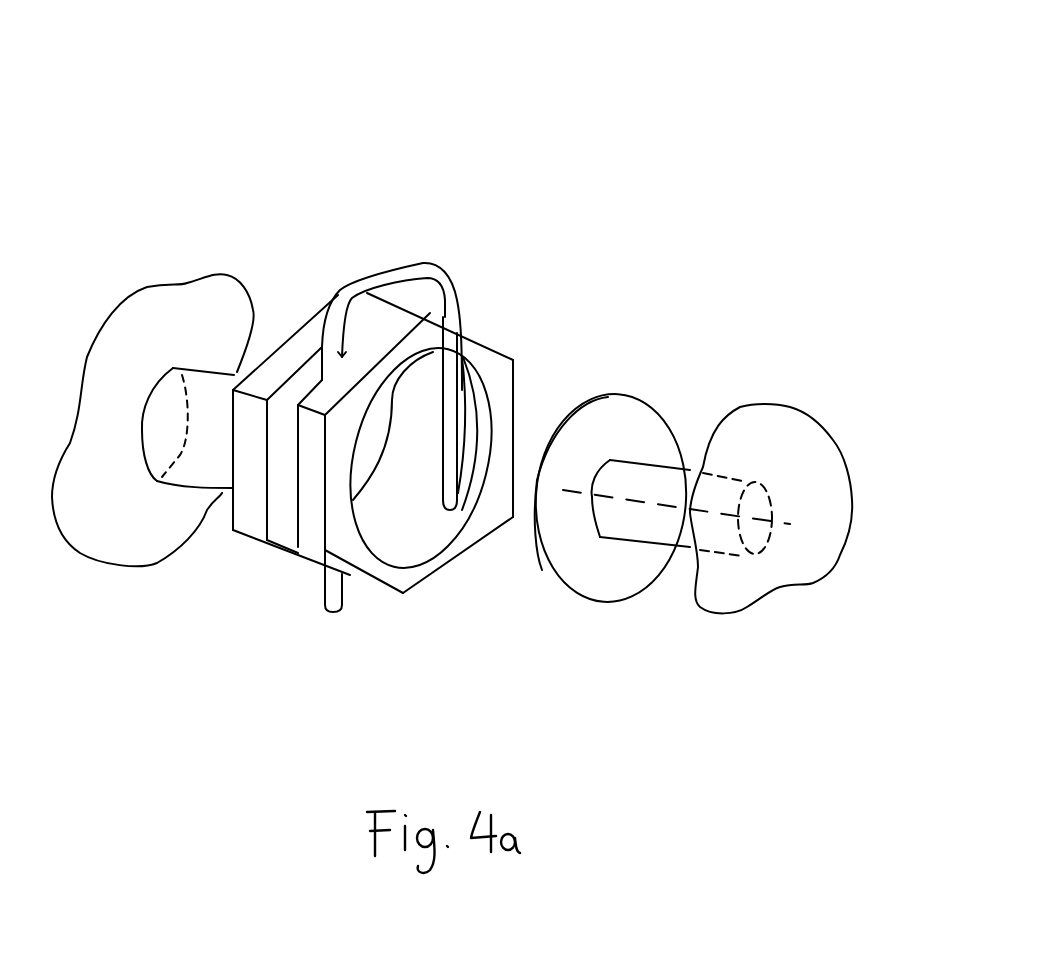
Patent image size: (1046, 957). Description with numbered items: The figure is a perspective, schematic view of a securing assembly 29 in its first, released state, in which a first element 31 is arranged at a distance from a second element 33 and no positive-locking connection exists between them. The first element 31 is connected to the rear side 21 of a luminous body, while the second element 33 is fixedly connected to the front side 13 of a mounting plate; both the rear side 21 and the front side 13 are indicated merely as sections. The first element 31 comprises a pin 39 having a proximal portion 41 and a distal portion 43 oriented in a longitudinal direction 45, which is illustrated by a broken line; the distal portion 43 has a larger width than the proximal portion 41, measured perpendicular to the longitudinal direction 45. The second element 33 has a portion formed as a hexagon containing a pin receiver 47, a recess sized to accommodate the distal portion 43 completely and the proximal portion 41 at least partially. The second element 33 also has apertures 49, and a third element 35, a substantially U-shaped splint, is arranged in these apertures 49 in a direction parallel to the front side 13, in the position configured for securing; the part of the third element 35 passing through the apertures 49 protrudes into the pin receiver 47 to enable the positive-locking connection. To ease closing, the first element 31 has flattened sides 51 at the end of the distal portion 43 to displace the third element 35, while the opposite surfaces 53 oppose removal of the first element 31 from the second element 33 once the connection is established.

The front side of mounting plate 13 is at (147, 288).
The rear side of luminous body 21 is at (800, 408).
The securing assembly 29 is at (578, 121).
The first element 31 is at (675, 512).
The second element 33 is at (370, 468).
The third element 35 is at (430, 270).
The pin 39 is at (677, 547).
The proximal portion 41 is at (680, 537).
The distal portion 43 is at (640, 443).
The longitudinal direction 45 is at (777, 523).
The pin receiver 47 is at (428, 471).
The apertures 49 is at (477, 387).
The flattened sides 51 is at (542, 572).
The surfaces 53 is at (600, 575).